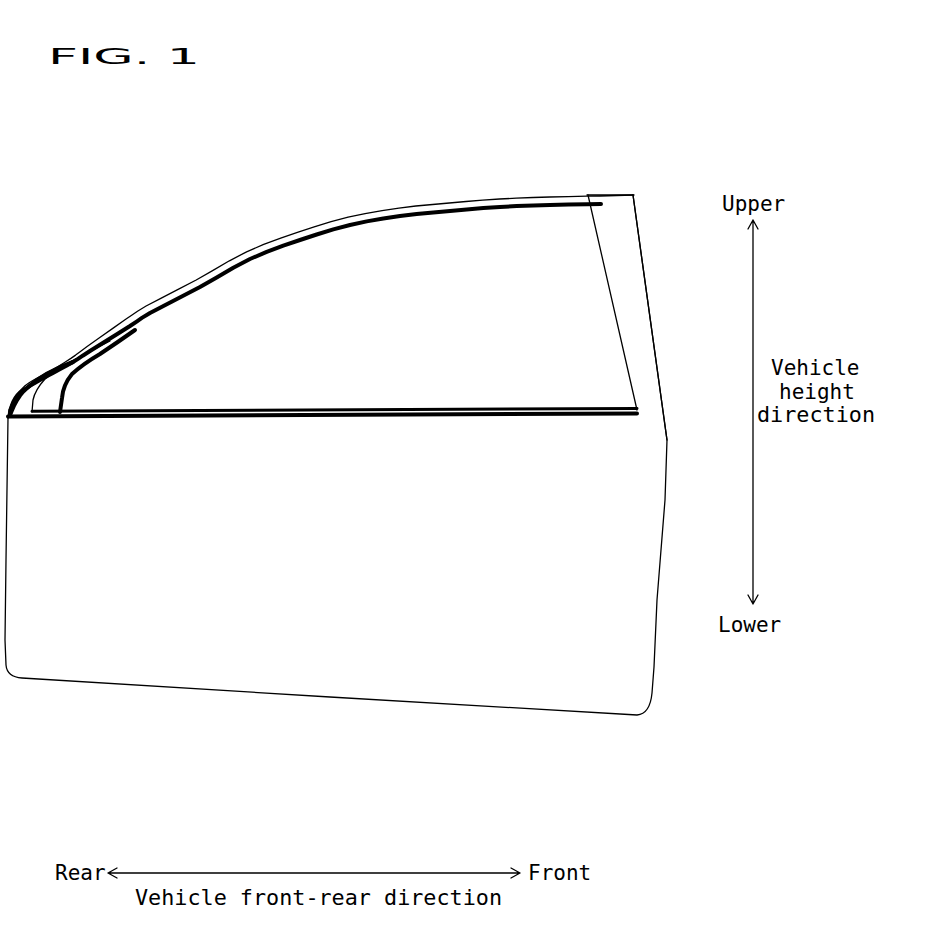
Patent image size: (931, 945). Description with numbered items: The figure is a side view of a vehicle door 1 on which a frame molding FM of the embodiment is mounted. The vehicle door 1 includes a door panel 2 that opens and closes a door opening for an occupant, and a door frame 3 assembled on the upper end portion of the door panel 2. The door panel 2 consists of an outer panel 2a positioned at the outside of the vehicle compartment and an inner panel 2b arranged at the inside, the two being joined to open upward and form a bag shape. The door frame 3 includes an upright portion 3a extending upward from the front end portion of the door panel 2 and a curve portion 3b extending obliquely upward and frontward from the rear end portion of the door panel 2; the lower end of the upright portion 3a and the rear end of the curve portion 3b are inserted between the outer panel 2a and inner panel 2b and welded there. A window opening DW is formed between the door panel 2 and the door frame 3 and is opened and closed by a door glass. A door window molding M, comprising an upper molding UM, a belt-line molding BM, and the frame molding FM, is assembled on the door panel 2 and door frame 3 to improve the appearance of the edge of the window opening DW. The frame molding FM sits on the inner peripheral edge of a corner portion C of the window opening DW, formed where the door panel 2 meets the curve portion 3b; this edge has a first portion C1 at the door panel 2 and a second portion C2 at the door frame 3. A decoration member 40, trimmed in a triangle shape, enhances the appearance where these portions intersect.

The vehicle door 1 is at (259, 176).
The door window molding M is at (360, 210).
The upper molding UM is at (435, 207).
The frame molding FM is at (157, 306).
The belt-line molding BM is at (460, 407).
The window opening DW is at (436, 282).
The corner portion C is at (129, 371).
The first portion C1 is at (113, 410).
The second portion C2 is at (100, 347).
The decoration member 40 is at (52, 400).
The door frame 3 is at (626, 259).
The upright portion 3a is at (633, 231).
The curve portion 3b is at (588, 193).
The door panel 2 is at (440, 751).
The outer panel 2a is at (458, 693).
The inner panel 2b is at (417, 693).